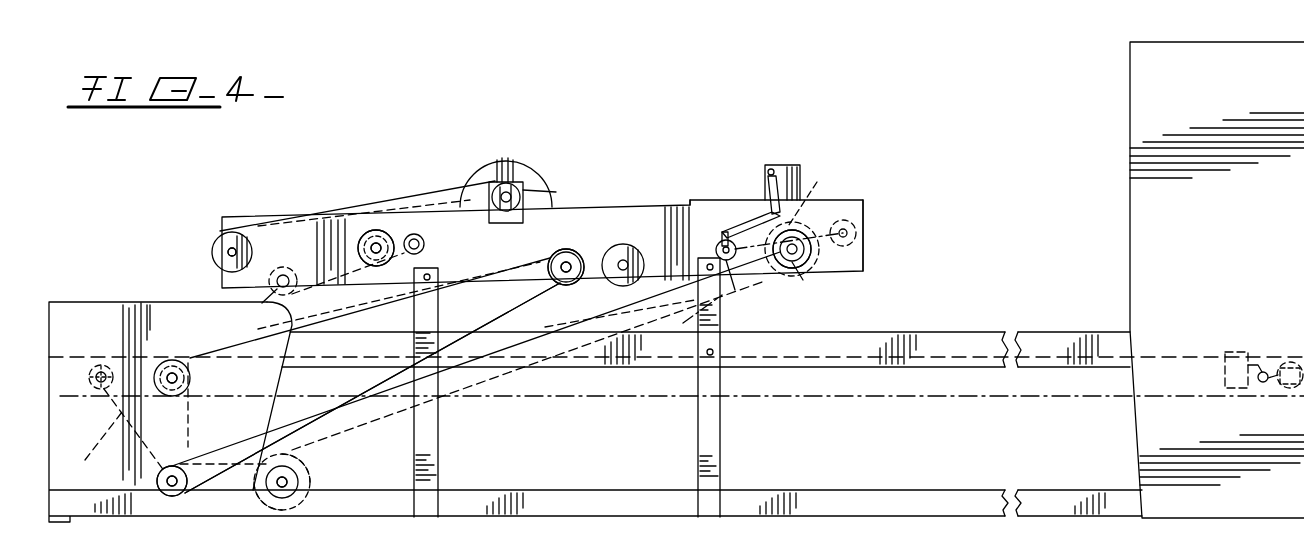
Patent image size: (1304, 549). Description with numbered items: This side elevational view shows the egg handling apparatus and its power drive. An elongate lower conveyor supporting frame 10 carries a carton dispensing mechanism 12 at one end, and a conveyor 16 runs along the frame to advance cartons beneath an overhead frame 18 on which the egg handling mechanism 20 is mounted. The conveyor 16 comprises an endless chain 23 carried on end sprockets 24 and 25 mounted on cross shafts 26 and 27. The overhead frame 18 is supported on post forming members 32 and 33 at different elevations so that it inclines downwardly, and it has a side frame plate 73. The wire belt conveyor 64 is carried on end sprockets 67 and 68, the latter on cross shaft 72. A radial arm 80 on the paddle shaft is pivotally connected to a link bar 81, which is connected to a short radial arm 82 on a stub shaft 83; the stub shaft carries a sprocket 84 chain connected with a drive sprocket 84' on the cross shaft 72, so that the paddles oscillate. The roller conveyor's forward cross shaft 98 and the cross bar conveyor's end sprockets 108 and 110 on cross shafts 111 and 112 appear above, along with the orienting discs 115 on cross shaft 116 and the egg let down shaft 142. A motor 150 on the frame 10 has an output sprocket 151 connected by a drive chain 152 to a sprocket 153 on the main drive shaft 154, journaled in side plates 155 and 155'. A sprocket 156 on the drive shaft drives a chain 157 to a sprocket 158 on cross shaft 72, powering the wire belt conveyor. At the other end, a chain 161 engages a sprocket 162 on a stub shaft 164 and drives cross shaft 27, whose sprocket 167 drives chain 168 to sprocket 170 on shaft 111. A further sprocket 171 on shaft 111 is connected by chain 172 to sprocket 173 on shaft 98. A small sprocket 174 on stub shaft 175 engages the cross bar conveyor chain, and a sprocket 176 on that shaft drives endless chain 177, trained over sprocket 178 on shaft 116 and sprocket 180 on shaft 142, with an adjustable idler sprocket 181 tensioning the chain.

The lower conveyor supporting frame 10 is at (372, 497).
The carton dispensing mechanism 12 is at (1140, 247).
The conveyor 16 is at (938, 323).
The overhead frame 18 is at (676, 195).
The egg handling mechanism 20 is at (857, 175).
The endless chain 23 is at (948, 355).
The end sprocket 24 is at (1290, 362).
The end sprocket 25 is at (172, 360).
The cross shaft 26 is at (1290, 388).
The cross shaft 27 is at (171, 396).
The post forming member 32 is at (720, 440).
The post forming member 33 is at (440, 443).
The wire belt conveyor 64 is at (856, 226).
The end sprocket 67 is at (857, 233).
The end sprocket 68 is at (809, 192).
The cross shaft 72 is at (802, 256).
The side frame plate 73 is at (656, 216).
The radial arm 80 is at (768, 172).
The link bar 81 is at (770, 206).
The short radial arm 82 is at (743, 228).
The stub shaft 83 is at (722, 248).
The sprocket 84 is at (743, 287).
The drive sprocket 84' is at (809, 282).
The cross shaft 98 is at (628, 252).
The end sprocket 108 is at (598, 286).
The end sprocket 110 is at (266, 305).
The cross shaft 111 is at (567, 260).
The cross shaft 112 is at (283, 274).
The orienting disc 115 is at (532, 168).
The cross shaft 116 is at (508, 180).
The egg let down shaft 142 is at (229, 250).
The motor 150 is at (300, 472).
The output sprocket 151 is at (290, 488).
The drive chain 152 is at (279, 466).
The sprocket 153 is at (166, 494).
The main drive shaft 154 is at (165, 481).
The side plate 155 is at (476, 359).
The side plate 155' is at (512, 366).
The sprocket 156 is at (168, 467).
The drive chain 157 is at (392, 417).
The sprocket 158 is at (798, 240).
The chain 161 is at (92, 450).
The sprocket 162 is at (96, 408).
The stub shaft 164 is at (103, 364).
The sprocket 167 is at (190, 377).
The chain 168 is at (357, 308).
The sprocket 170 is at (556, 257).
The sprocket 171 is at (562, 285).
The chain 172 is at (612, 304).
The sprocket 173 is at (638, 280).
The small sprocket 174 is at (378, 243).
The stub shaft 175 is at (375, 243).
The sprocket 176 is at (364, 238).
The endless chain 177 is at (408, 202).
The sprocket 178 is at (540, 192).
The sprocket 180 is at (218, 255).
The idler sprocket 181 is at (425, 244).